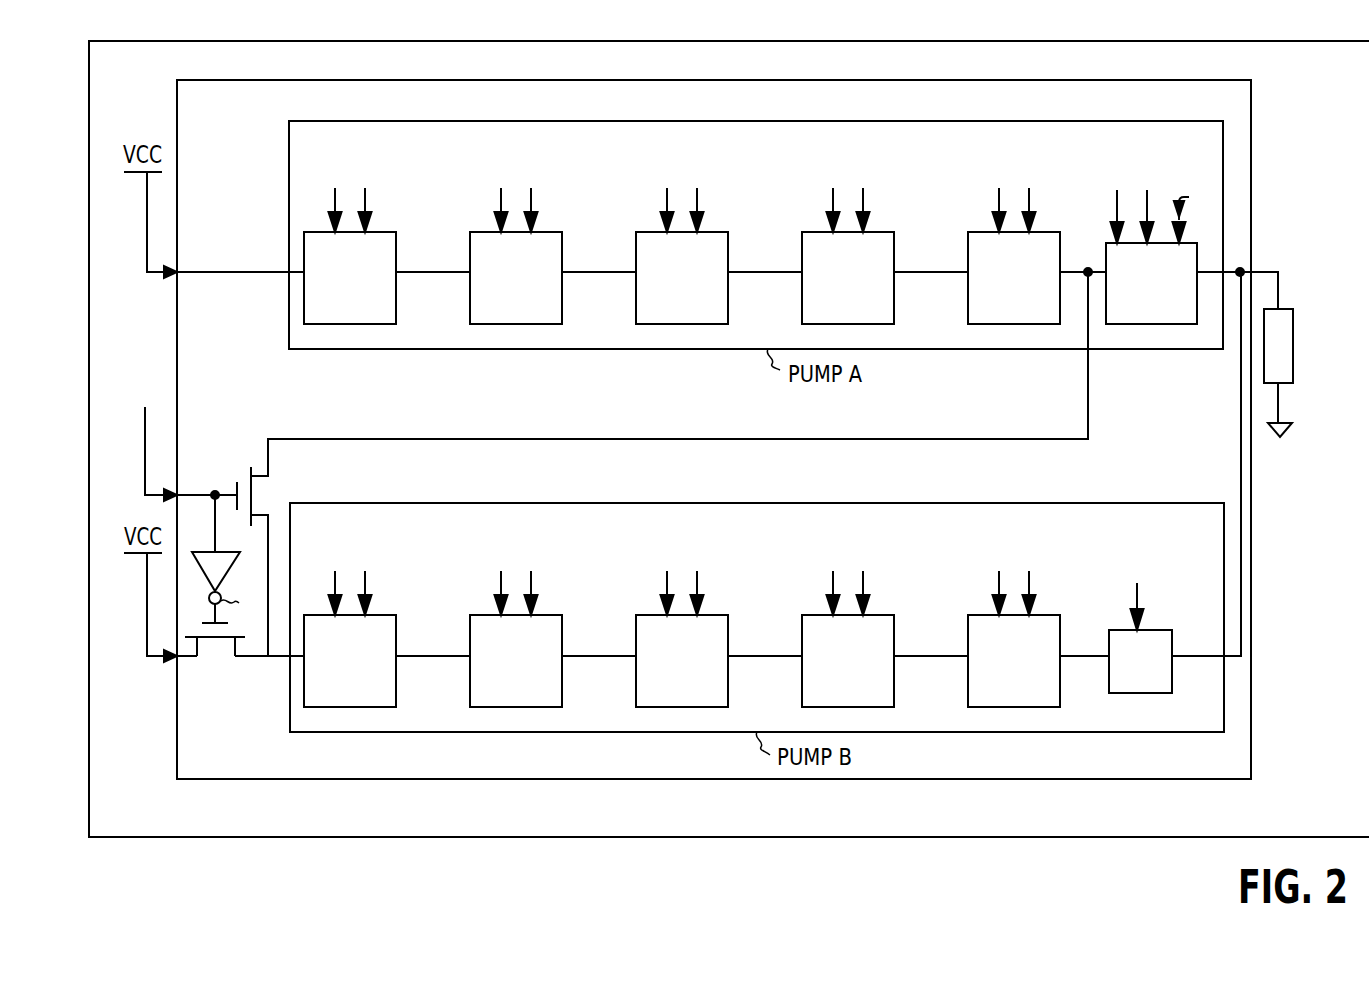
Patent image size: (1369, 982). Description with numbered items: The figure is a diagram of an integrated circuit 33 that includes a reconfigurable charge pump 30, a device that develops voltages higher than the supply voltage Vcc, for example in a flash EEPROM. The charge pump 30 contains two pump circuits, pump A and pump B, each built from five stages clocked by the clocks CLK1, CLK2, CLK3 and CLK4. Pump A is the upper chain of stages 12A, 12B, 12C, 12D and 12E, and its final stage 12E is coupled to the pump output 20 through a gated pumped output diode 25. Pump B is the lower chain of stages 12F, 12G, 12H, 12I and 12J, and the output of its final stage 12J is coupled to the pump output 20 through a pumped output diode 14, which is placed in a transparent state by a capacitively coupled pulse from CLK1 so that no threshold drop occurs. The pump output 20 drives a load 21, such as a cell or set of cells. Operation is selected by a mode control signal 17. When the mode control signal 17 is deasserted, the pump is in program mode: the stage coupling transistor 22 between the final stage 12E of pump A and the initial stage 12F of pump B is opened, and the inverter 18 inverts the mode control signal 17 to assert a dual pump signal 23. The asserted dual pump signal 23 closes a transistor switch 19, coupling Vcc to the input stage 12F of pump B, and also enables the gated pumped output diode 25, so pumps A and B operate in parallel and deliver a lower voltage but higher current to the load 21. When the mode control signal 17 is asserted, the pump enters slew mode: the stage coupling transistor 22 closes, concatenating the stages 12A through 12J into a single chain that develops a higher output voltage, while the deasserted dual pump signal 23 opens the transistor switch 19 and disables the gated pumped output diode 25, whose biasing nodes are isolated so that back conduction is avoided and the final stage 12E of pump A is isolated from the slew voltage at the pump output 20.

The stage 12A is at (348, 241).
The stage 12B is at (514, 241).
The stage 12C is at (680, 241).
The stage 12D is at (846, 241).
The final stage 12E is at (1012, 241).
The initial stage 12F is at (348, 624).
The stage 12G is at (514, 624).
The stage 12H is at (680, 624).
The stage 12I is at (846, 624).
The final stage 12J is at (1012, 624).
The pumped output diode 14 is at (1140, 623).
The mode control signal 17 is at (169, 426).
The inverter 18 is at (216, 547).
The transistor switch 19 is at (212, 660).
The pump output 20 is at (1278, 270).
The load 21 is at (1293, 361).
The stage coupling transistor 22 is at (268, 494).
The dual pump signal 23 is at (718, 394).
The gated pumped output diode 25 is at (1139, 241).
The reconfigurable charge pump 30 is at (1213, 771).
The integrated circuit 33 is at (1327, 821).